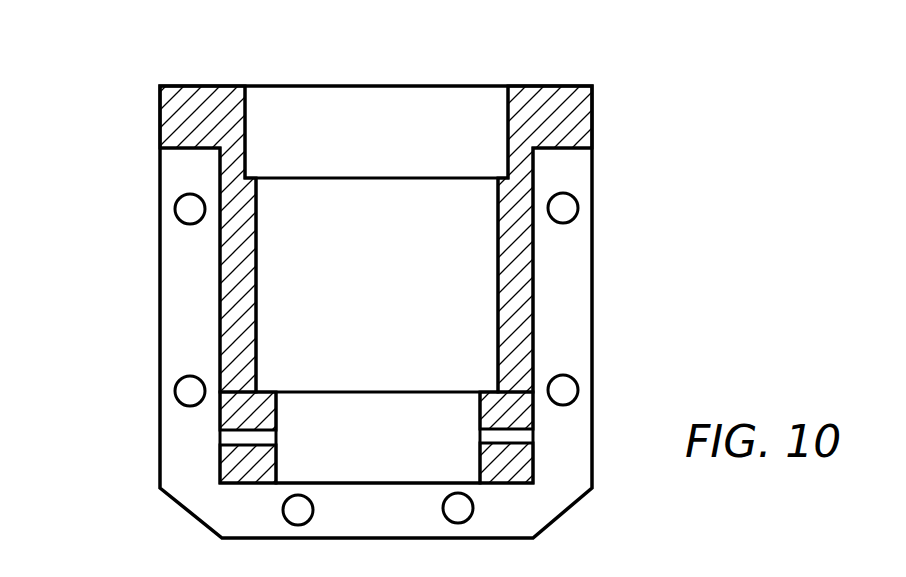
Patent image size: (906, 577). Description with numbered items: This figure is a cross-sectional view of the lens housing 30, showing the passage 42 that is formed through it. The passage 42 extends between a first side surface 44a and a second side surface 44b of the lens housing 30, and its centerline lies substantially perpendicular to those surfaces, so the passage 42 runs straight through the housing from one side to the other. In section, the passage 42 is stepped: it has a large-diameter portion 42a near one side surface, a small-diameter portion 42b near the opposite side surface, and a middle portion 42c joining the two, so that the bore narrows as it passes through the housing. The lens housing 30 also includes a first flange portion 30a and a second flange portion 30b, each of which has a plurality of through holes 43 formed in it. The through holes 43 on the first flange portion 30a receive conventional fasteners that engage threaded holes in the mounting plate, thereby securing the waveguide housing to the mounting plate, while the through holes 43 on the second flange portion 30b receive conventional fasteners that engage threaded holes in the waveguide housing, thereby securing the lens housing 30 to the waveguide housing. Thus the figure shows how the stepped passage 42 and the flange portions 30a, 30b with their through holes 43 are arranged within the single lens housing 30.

The lens housing 30 is at (367, 296).
The first flange portion 30a is at (578, 184).
The second flange portion 30b is at (593, 104).
The passage 42 is at (376, 261).
The large-diameter portion 42a is at (430, 151).
The small-diameter portion 42b is at (402, 456).
The middle portion 42c is at (420, 316).
The through holes 43 is at (188, 210).
The first side surface 44a is at (252, 477).
The second side surface 44b is at (192, 86).